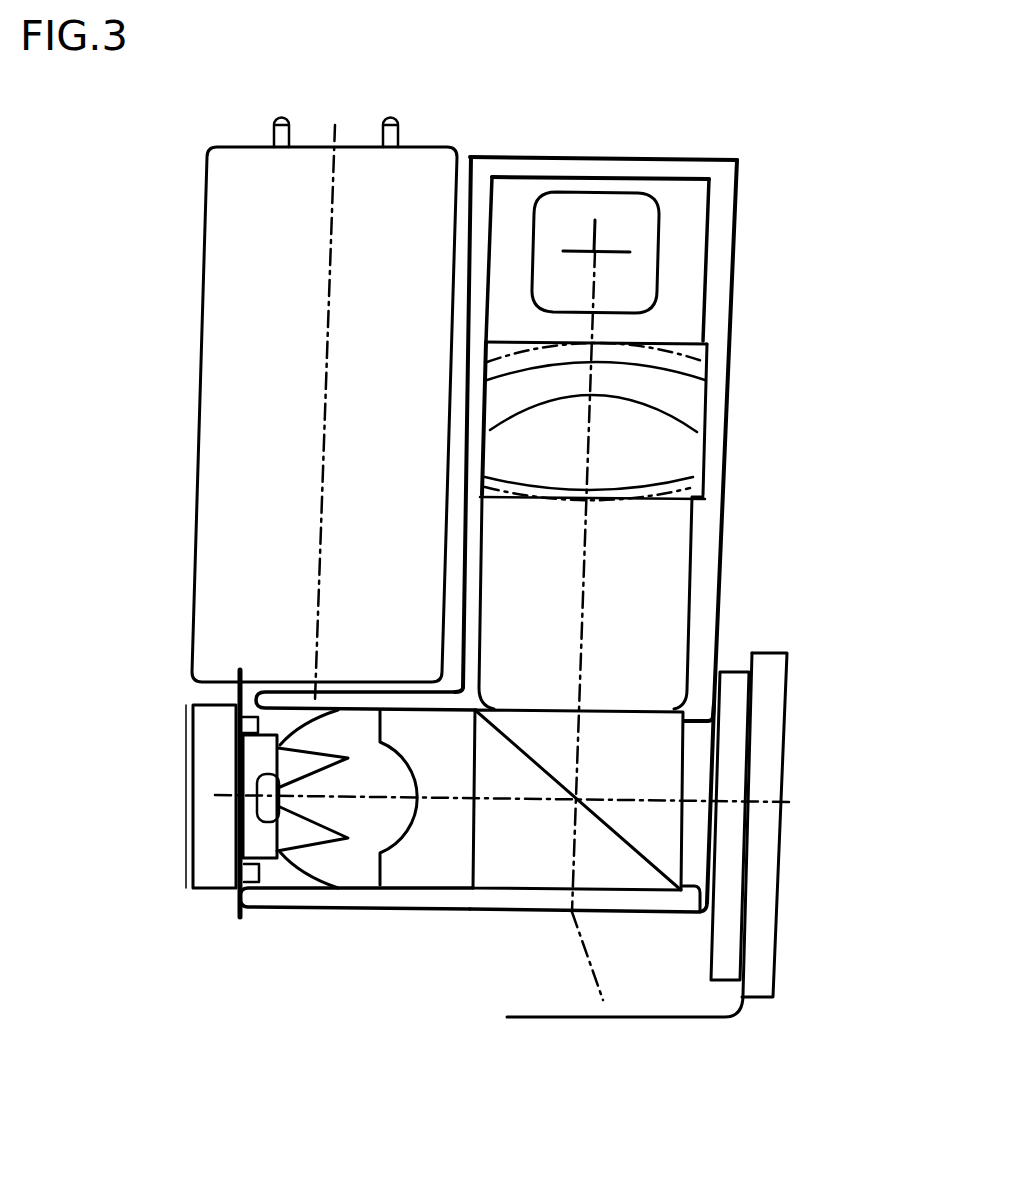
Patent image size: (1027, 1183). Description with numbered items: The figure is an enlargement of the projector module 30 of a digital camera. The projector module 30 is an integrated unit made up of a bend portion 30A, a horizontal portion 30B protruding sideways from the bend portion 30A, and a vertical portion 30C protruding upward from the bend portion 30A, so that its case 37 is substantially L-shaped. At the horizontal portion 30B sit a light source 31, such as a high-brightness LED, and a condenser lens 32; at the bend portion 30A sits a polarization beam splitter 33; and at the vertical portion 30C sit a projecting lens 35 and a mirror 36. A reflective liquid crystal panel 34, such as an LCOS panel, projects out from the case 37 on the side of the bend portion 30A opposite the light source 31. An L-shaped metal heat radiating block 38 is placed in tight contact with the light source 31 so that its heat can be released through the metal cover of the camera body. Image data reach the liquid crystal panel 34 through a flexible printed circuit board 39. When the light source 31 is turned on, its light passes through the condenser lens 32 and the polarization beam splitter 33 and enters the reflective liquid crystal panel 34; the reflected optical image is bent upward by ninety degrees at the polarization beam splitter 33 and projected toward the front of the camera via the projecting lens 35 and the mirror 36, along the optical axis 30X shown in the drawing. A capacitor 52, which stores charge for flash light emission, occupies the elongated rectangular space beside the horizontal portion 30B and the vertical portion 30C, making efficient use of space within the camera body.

The projector module 30 is at (656, 136).
The bend portion 30A is at (648, 932).
The horizontal portion 30B is at (429, 932).
The vertical portion 30C is at (736, 510).
The optical axis 30X is at (603, 1003).
The light source 31 is at (276, 858).
The condenser lens 32 is at (356, 874).
The polarization beam splitter 33 is at (525, 868).
The reflective liquid crystal panel 34 is at (735, 757).
The projecting lens 35 is at (680, 398).
The mirror 36 is at (685, 247).
The case 37 is at (703, 605).
The heat radiating block 38 is at (217, 847).
The flexible printed circuit board 39 is at (603, 1008).
The capacitor 52 is at (232, 358).